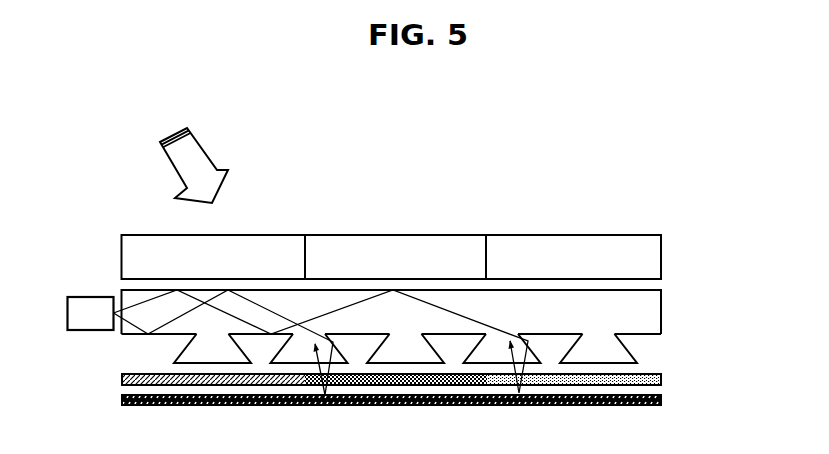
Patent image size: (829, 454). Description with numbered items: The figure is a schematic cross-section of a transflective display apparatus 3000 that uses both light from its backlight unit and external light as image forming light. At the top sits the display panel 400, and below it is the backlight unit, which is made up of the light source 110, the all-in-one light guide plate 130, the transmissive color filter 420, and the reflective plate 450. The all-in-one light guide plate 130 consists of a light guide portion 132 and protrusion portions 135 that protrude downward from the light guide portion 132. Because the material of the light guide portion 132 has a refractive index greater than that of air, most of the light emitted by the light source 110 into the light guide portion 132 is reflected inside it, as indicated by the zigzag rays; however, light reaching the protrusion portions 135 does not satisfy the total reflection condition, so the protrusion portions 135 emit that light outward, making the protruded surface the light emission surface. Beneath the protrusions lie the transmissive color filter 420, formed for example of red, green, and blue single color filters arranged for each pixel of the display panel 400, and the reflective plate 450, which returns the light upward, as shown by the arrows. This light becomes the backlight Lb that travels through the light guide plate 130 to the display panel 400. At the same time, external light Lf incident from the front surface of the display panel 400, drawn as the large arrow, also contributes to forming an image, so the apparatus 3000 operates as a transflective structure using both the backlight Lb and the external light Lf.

The light source 110 is at (87, 303).
The all-in-one light guide plate 130 is at (445, 326).
The light guide portion 132 is at (653, 310).
The protrusion portions 135 is at (622, 347).
The display panel 400 is at (661, 257).
The transmissive color filter 420 is at (661, 380).
The reflective plate 450 is at (661, 399).
The transflective display apparatus 3000 is at (626, 184).
The external light Lf is at (207, 155).
The backlight Lb is at (122, 336).